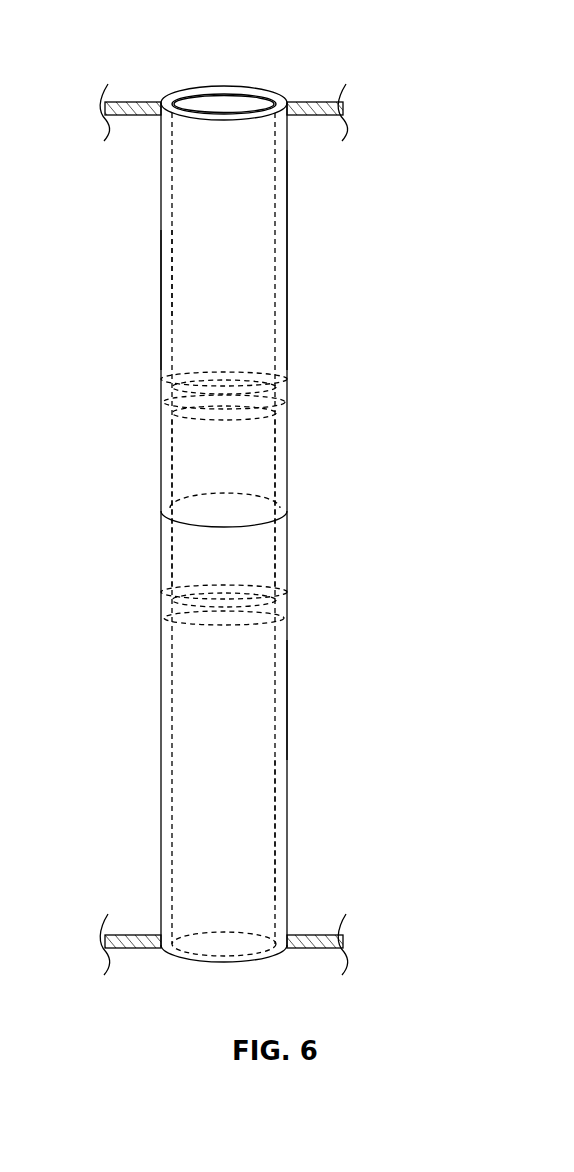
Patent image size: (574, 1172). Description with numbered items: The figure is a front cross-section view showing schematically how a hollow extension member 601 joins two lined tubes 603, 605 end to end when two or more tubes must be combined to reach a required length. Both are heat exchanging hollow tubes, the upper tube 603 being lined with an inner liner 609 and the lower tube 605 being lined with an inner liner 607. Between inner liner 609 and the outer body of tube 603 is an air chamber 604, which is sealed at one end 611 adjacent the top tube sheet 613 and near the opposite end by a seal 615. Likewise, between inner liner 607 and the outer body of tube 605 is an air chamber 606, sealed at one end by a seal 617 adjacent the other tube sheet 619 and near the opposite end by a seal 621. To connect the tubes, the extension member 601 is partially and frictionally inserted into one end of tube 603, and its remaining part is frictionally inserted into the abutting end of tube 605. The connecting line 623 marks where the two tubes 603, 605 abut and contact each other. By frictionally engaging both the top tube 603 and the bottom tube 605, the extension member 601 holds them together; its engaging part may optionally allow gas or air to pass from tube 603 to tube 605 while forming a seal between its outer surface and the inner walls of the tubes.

The extension member 601 is at (247, 475).
The lined tube 603 is at (305, 288).
The chamber 604 is at (288, 187).
The lined tube 605 is at (150, 758).
The chamber 606 is at (288, 685).
The inner liner 607 is at (276, 868).
The inner liner 609 is at (186, 287).
The end 611 is at (284, 101).
The top tube sheet 613 is at (346, 108).
The seal 615 is at (185, 412).
The seal 617 is at (243, 962).
The tube sheet 619 is at (349, 935).
The seal 621 is at (252, 623).
The connecting line 623 is at (255, 528).